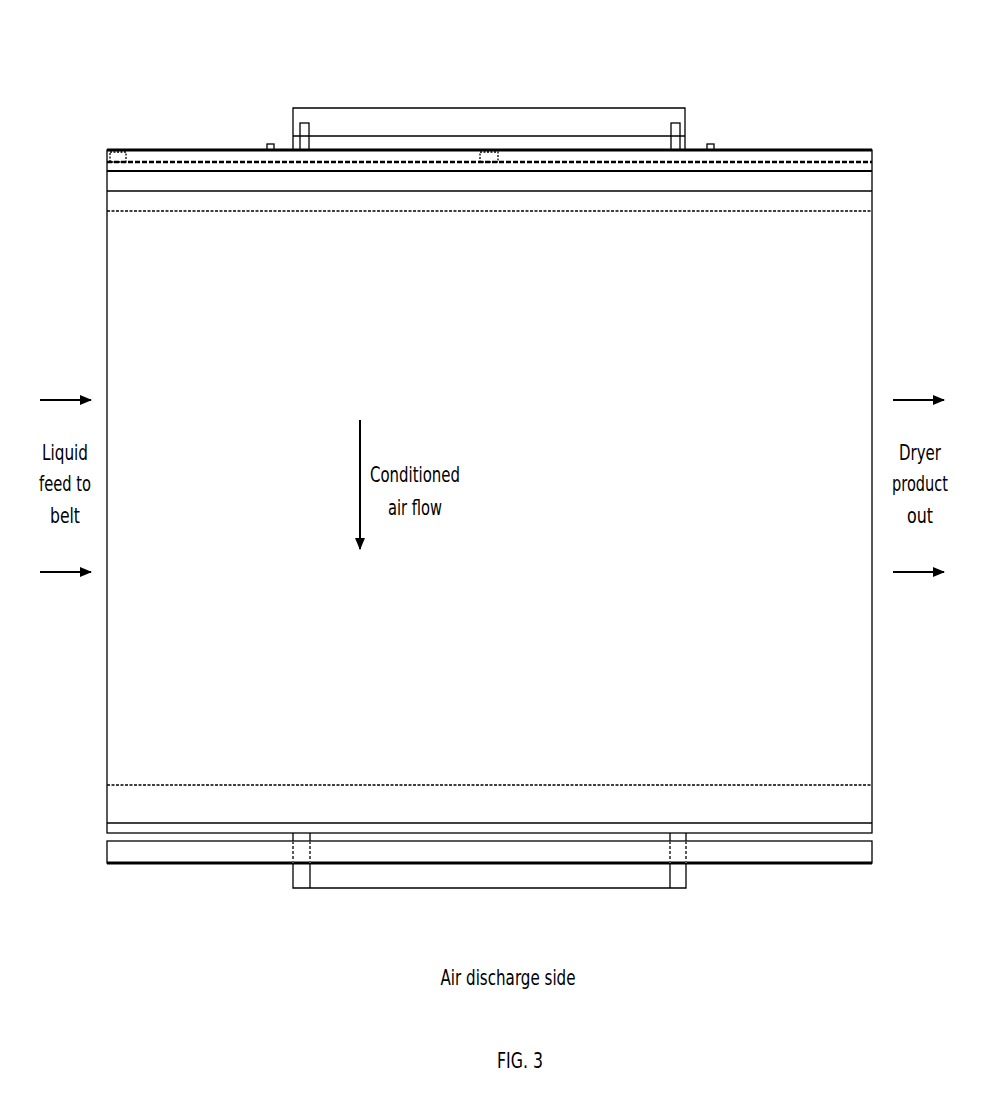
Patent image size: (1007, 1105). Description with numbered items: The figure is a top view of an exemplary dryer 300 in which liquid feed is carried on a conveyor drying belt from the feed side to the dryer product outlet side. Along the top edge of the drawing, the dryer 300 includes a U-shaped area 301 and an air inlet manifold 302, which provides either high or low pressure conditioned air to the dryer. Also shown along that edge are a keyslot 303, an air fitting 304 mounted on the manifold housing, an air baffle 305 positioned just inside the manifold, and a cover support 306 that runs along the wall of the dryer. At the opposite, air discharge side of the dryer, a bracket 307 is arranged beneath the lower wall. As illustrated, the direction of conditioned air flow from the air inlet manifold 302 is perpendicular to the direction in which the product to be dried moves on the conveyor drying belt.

The dryer 300 is at (85, 63).
The U-shaped area 301 is at (118, 148).
The air inlet manifold 302 is at (187, 153).
The keyslot 303 is at (270, 141).
The air fitting 304 is at (305, 122).
The air baffle 305 is at (731, 187).
The cover support 306 is at (861, 163).
The bracket 307 is at (305, 858).